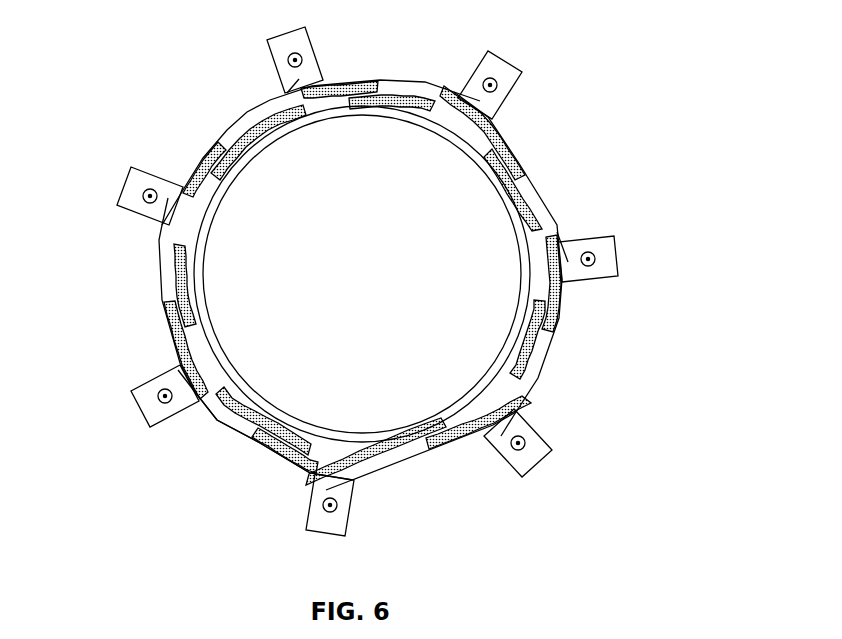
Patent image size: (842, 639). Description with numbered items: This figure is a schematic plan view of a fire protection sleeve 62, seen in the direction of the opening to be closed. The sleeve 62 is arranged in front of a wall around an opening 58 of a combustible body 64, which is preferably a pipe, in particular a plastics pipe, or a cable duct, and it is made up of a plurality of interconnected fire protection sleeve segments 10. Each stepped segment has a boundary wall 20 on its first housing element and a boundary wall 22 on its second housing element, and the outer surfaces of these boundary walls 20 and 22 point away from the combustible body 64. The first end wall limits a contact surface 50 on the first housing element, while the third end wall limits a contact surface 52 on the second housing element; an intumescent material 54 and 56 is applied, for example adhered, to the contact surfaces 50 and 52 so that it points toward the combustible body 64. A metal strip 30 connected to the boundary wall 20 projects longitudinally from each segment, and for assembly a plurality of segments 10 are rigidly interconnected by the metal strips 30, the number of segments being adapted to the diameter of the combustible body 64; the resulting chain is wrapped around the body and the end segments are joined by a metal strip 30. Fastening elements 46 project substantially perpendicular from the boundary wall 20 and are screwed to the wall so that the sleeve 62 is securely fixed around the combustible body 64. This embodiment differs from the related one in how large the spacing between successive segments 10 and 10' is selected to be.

The fire protection sleeve segment 10 is at (363, 313).
The fire protection sleeve segment 10' is at (294, 274).
The boundary wall 20 is at (307, 477).
The boundary wall 22 is at (428, 456).
The metal strip 30 is at (208, 417).
The fastening element 46 is at (334, 516).
The contact surface 50 is at (305, 443).
The contact surface 52 is at (380, 453).
The intumescent material 54 is at (332, 465).
The intumescent material 56 is at (393, 450).
The opening 58 is at (318, 222).
The fire protection sleeve 62 is at (652, 122).
The combustible body 64 is at (450, 112).